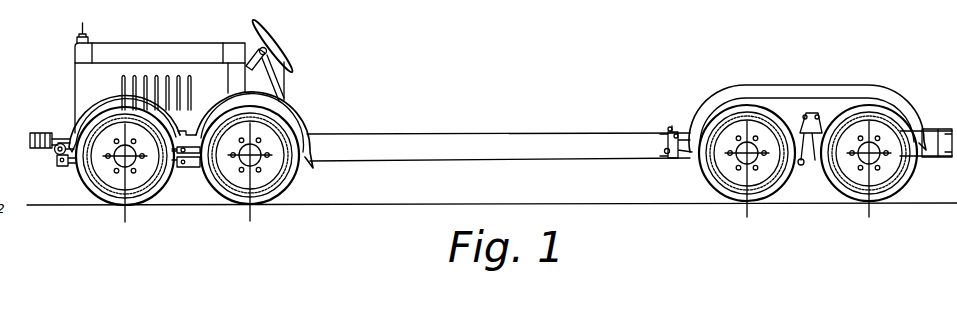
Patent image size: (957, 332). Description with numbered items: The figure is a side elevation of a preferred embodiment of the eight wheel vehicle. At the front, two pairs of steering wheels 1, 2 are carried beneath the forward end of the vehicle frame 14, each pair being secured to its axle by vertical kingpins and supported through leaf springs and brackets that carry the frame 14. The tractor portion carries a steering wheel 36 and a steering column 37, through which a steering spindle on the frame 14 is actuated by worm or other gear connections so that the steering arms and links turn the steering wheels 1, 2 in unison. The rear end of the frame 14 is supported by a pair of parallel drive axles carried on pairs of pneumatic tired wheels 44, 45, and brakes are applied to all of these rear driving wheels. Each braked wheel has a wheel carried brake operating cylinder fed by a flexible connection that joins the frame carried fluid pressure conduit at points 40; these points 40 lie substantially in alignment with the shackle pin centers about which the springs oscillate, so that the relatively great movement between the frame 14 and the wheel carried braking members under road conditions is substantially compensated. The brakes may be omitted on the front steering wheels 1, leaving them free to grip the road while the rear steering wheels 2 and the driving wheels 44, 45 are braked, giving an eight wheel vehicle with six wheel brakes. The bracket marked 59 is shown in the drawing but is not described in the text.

The steering wheels 1 is at (104, 205).
The steering wheels 2 is at (272, 200).
The vehicle frame 14 is at (357, 136).
The steering wheel 36 is at (273, 38).
The steering column 37 is at (246, 48).
The connection points 40 is at (50, 160).
The pneumatic tired wheels 44 is at (728, 95).
The pneumatic tired wheels 45 is at (895, 94).
The lower bracket 59 is at (64, 168).